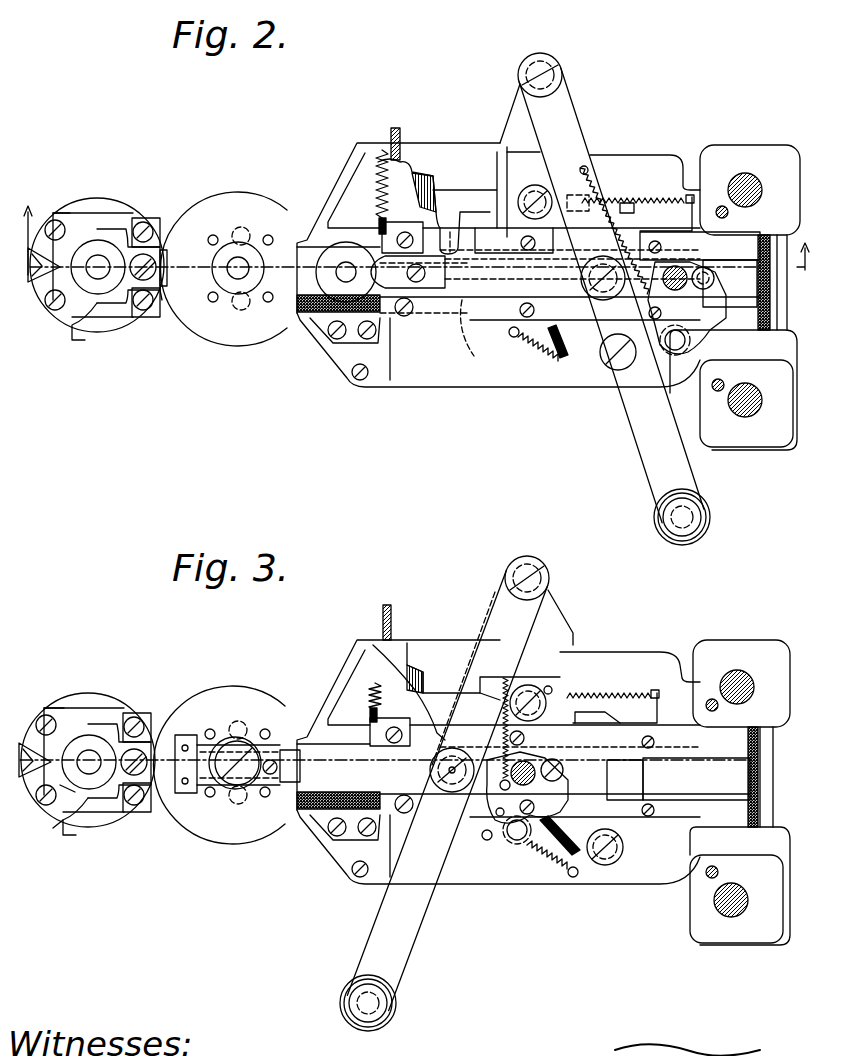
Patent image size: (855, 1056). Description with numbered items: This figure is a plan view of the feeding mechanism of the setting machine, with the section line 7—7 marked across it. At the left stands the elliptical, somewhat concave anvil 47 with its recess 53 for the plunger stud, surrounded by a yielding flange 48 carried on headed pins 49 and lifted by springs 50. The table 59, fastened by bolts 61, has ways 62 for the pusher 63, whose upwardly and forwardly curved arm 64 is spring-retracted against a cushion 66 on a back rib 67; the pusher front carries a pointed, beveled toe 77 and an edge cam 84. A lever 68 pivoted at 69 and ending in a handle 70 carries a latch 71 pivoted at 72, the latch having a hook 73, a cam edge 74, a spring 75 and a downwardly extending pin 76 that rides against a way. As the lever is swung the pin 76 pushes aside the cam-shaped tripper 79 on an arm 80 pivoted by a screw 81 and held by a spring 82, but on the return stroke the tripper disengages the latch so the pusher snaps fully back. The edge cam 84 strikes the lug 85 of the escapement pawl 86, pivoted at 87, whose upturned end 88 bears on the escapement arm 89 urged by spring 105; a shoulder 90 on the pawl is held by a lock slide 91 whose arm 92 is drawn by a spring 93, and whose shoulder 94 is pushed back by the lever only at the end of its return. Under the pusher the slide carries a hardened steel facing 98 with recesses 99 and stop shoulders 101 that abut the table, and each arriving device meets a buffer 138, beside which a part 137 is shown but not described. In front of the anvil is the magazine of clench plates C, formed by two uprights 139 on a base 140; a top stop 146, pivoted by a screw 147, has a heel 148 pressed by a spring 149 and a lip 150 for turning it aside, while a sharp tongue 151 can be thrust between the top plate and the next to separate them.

In FIG. 2, the section line 7 is at (421, 233).
In FIG. 2, the anvil 47 is at (230, 292).
In FIG. 2, the yielding flange 48 is at (255, 348).
In FIG. 3, the yielding flange 48 is at (219, 765).
In FIG. 2, the pins 49 is at (212, 235).
In FIG. 3, the pins 49 is at (211, 729).
In FIG. 2, the springs 50 is at (245, 230).
In FIG. 3, the springs 50 is at (240, 722).
In FIG. 2, the recess 53 is at (232, 255).
In FIG. 3, the recess 53 is at (215, 778).
In FIG. 2, the table 59 is at (482, 143).
In FIG. 3, the table 59 is at (440, 645).
In FIG. 2, the bolts 61 is at (748, 175).
In FIG. 3, the bolts 61 is at (750, 680).
In FIG. 2, the ways 62 is at (572, 315).
In FIG. 2, the pusher 63 is at (455, 298).
In FIG. 2, the curved arm 64 is at (676, 266).
In FIG. 3, the curved arm 64 is at (540, 770).
In FIG. 2, the cushion 66 is at (766, 250).
In FIG. 3, the cushion 66 is at (760, 752).
In FIG. 2, the back rib 67 is at (789, 313).
In FIG. 3, the back rib 67 is at (775, 783).
In FIG. 2, the lever 68 is at (640, 450).
In FIG. 3, the lever 68 is at (410, 949).
In FIG. 2, the pivot 69 is at (540, 53).
In FIG. 3, the pivot 69 is at (530, 555).
In FIG. 2, the handle 70 is at (711, 523).
In FIG. 3, the handle 70 is at (390, 1022).
In FIG. 2, the latch 71 is at (718, 314).
In FIG. 3, the latch 71 is at (605, 800).
In FIG. 2, the latch pivot 72 is at (581, 283).
In FIG. 3, the latch pivot 72 is at (455, 790).
In FIG. 2, the hook 73 is at (710, 262).
In FIG. 3, the hook 73 is at (700, 778).
In FIG. 2, the cam edge 74 is at (714, 278).
In FIG. 3, the cam edge 74 is at (563, 785).
In FIG. 2, the spring 75 is at (640, 218).
In FIG. 3, the spring 75 is at (549, 688).
In FIG. 2, the pin 76 is at (690, 341).
In FIG. 3, the pin 76 is at (506, 834).
In FIG. 2, the toe 77 is at (380, 240).
In FIG. 2, the cam-shaped tripper 79 is at (558, 366).
In FIG. 3, the cam-shaped tripper 79 is at (550, 858).
In FIG. 3, the arm 80 is at (590, 865).
In FIG. 2, the screw 81 is at (606, 370).
In FIG. 3, the screw 81 is at (615, 860).
In FIG. 2, the spring 82 is at (546, 342).
In FIG. 3, the spring 82 is at (540, 852).
In FIG. 2, the edge cam 84 is at (580, 194).
In FIG. 3, the edge cam 84 is at (430, 768).
In FIG. 2, the lug 85 is at (478, 212).
In FIG. 3, the lug 85 is at (564, 918).
In FIG. 2, the escapement pawl 86 is at (488, 189).
In FIG. 3, the escapement pawl 86 is at (500, 704).
In FIG. 2, the pawl pivot 87 is at (537, 185).
In FIG. 3, the pawl pivot 87 is at (535, 687).
In FIG. 2, the upturned pawl end 88 is at (415, 170).
In FIG. 3, the upturned pawl end 88 is at (397, 650).
In FIG. 2, the escapement arm 89 is at (395, 128).
In FIG. 3, the escapement arm 89 is at (387, 605).
In FIG. 2, the shoulder 90 is at (508, 170).
In FIG. 2, the lock slide 91 is at (518, 232).
In FIG. 2, the arm 92 is at (690, 195).
In FIG. 3, the arm 92 is at (657, 690).
In FIG. 2, the spring 93 is at (626, 198).
In FIG. 3, the spring 93 is at (610, 698).
In FIG. 2, the shoulder 94 is at (625, 200).
In FIG. 3, the shoulder 94 is at (590, 712).
In FIG. 2, the hardened steel facing 98 is at (308, 240).
In FIG. 2, the recesses 99 is at (340, 248).
In FIG. 2, the stop shoulders 101 is at (299, 240).
In FIG. 2, the spring 105 is at (382, 155).
In FIG. 3, the spring 105 is at (370, 700).
In FIG. 2, the plate 137 is at (372, 338).
In FIG. 2, the buffer 138 is at (395, 353).
In FIG. 3, the buffer 138 is at (300, 768).
In FIG. 2, the uprights 139 is at (50, 212).
In FIG. 3, the uprights 139 is at (42, 735).
In FIG. 3, the base 140 is at (105, 802).
In FIG. 2, the top stop 146 is at (110, 233).
In FIG. 3, the top stop 146 is at (93, 720).
In FIG. 2, the screw 147 is at (155, 245).
In FIG. 3, the screw 147 is at (145, 808).
In FIG. 2, the heel 148 is at (140, 304).
In FIG. 3, the heel 148 is at (150, 740).
In FIG. 2, the spring 149 is at (160, 300).
In FIG. 3, the spring 149 is at (188, 735).
In FIG. 2, the projecting lip 150 is at (72, 327).
In FIG. 3, the projecting lip 150 is at (68, 822).
In FIG. 2, the tongue 151 is at (45, 288).
In FIG. 3, the tongue 151 is at (38, 783).
In FIG. 3, the clench plate C is at (70, 792).